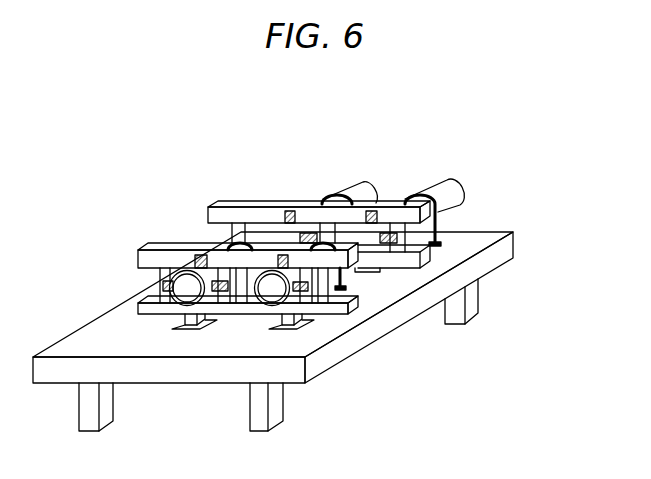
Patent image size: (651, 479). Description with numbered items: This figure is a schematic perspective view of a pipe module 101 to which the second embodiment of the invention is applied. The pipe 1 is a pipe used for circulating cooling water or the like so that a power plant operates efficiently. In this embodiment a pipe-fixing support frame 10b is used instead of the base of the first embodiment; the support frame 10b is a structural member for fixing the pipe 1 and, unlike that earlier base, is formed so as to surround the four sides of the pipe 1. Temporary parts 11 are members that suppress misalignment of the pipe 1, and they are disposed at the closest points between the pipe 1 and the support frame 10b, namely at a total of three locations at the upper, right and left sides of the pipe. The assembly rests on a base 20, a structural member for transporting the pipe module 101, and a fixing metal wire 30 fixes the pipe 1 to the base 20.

The pipe 1 is at (191, 290).
The pipe-fixing support frame 10b is at (352, 322).
The temporary part 11 is at (386, 252).
The base 20 is at (430, 298).
The metal wire 30 is at (412, 200).
The pipe module 101 is at (535, 92).